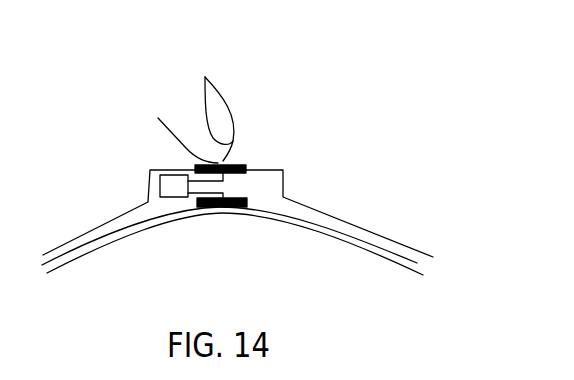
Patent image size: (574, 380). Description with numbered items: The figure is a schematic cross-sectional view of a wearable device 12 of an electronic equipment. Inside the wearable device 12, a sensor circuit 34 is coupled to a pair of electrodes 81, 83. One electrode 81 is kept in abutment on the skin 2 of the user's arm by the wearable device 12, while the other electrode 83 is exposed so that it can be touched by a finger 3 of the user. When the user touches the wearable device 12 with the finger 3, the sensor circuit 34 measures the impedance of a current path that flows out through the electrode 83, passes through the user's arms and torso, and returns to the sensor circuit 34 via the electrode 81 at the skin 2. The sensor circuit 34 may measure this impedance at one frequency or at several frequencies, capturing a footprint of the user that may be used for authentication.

The skin 2 is at (117, 237).
The finger 3 is at (206, 77).
The wearable device 12 is at (283, 184).
The sensor circuit 34 is at (160, 176).
The electrode 81 is at (227, 208).
The electrode 83 is at (233, 161).